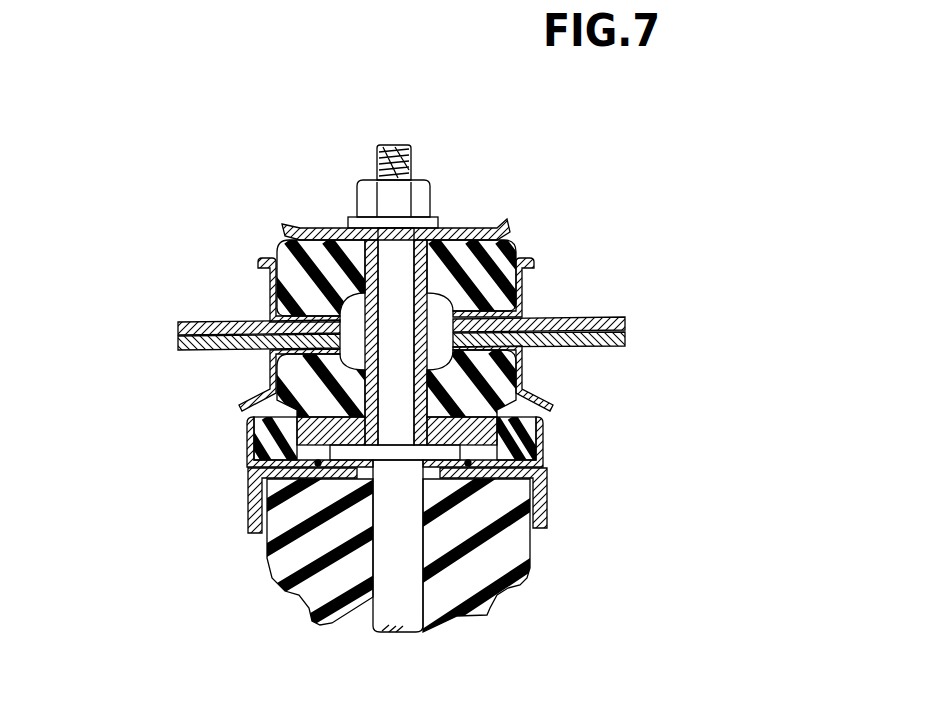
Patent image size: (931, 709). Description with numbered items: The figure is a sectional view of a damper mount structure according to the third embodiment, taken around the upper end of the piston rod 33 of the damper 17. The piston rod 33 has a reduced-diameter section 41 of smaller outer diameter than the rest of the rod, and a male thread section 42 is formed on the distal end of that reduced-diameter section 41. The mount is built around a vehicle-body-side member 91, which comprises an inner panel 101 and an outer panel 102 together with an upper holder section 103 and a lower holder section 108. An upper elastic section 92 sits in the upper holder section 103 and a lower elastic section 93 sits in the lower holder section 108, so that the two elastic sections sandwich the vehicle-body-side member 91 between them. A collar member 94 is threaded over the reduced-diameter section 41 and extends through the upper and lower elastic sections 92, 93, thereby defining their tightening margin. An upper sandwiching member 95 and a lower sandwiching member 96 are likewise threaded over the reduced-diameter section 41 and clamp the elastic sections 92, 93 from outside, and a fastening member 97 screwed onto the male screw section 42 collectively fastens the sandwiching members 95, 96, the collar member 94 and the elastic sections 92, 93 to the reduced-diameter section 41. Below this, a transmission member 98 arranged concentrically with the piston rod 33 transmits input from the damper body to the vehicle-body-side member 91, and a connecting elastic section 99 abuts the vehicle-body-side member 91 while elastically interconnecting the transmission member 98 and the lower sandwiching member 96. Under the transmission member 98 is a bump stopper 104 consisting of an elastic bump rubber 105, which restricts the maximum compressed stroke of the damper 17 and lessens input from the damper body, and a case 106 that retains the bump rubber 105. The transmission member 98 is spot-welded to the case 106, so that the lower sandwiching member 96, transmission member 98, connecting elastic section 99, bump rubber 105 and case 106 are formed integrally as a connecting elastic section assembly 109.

The damper 17 is at (508, 625).
The piston rod 33 is at (427, 549).
The reduced-diameter section 41 is at (392, 247).
The male thread section 42 is at (390, 155).
The vehicle-body-side member 91 is at (489, 336).
The upper elastic section 92 is at (460, 247).
The lower elastic section 93 is at (290, 374).
The collar member 94 is at (345, 269).
The upper sandwiching member 95 is at (447, 227).
The lower sandwiching member 96 is at (300, 422).
The fastening member 97 is at (420, 193).
The transmission member 98 is at (262, 461).
The connecting elastic section 99 is at (262, 438).
The inner panel 101 is at (627, 340).
The outer panel 102 is at (627, 327).
The upper holder section 103 is at (530, 283).
The bump stopper 104 is at (328, 545).
The bump rubber 105 is at (285, 556).
The case 106 is at (248, 507).
The lower holder section 108 is at (527, 370).
The connecting elastic section assembly 109 is at (285, 468).